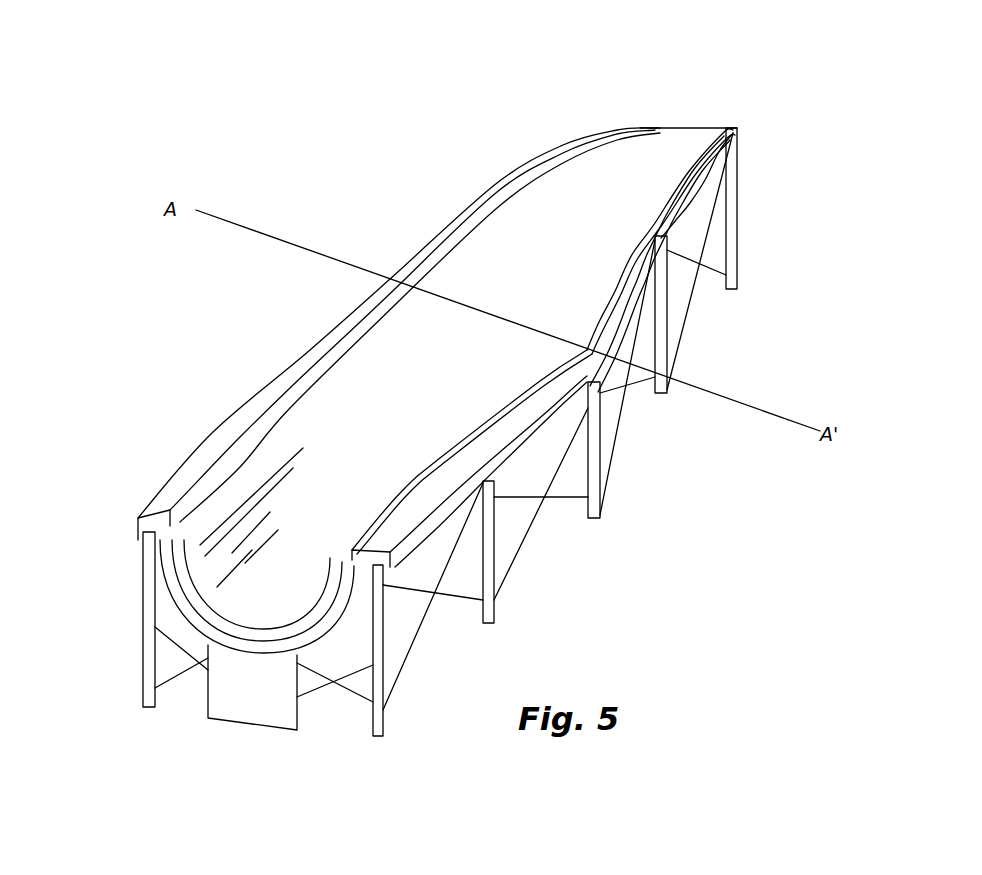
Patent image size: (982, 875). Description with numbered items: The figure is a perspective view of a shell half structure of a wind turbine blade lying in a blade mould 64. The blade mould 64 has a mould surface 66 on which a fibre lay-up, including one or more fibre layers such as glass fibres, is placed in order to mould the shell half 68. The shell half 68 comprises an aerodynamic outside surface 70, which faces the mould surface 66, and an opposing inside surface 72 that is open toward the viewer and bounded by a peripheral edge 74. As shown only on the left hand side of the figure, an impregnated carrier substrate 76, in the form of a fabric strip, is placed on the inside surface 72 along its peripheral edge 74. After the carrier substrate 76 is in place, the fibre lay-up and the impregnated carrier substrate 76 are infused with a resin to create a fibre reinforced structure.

The blade mould 64 is at (658, 476).
The mould surface 66 is at (193, 608).
The shell half 68 is at (663, 150).
The aerodynamic outside surface 70 is at (307, 636).
The inside surface 72 is at (418, 397).
The peripheral edge 74 is at (618, 280).
The impregnated carrier substrate 76 is at (142, 512).